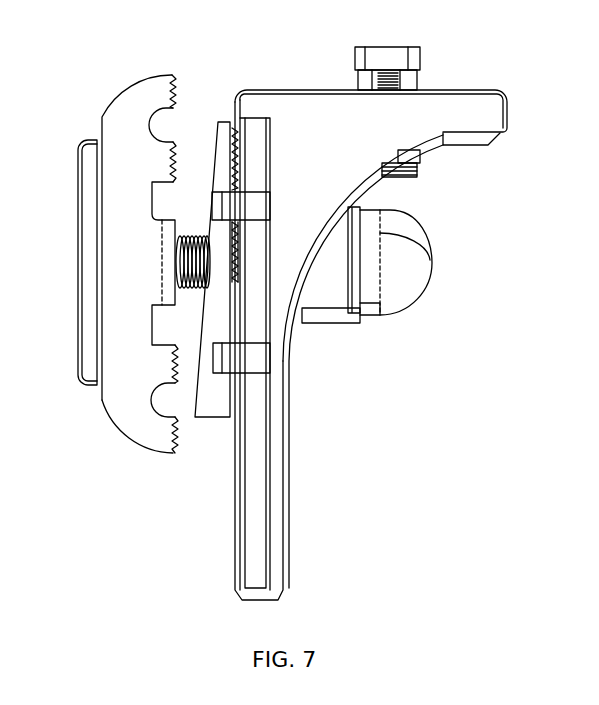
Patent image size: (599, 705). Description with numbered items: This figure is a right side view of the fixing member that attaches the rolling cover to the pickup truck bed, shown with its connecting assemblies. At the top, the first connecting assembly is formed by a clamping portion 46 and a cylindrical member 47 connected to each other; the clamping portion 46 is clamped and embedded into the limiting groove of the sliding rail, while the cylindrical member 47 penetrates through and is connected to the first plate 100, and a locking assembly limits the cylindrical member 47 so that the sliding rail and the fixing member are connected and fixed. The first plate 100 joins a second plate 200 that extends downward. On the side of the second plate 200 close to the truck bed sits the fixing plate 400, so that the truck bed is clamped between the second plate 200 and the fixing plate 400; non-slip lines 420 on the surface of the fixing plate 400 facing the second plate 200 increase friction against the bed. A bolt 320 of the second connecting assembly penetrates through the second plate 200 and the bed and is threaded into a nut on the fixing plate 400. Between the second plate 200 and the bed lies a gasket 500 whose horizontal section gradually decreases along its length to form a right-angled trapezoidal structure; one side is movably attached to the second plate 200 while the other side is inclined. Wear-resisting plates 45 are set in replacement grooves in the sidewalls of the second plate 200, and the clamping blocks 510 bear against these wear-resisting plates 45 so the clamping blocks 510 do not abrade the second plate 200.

The first plate 100 is at (477, 107).
The second plate 200 is at (277, 540).
The bolt 320 is at (176, 288).
The fixing plate 400 is at (135, 135).
The non-slip lines 420 is at (173, 77).
The wear-resisting plates 45 is at (258, 463).
The clamping portion 46 is at (418, 47).
The cylindrical member 47 is at (360, 82).
The gasket 500 is at (220, 405).
The clamping blocks 510 is at (248, 360).